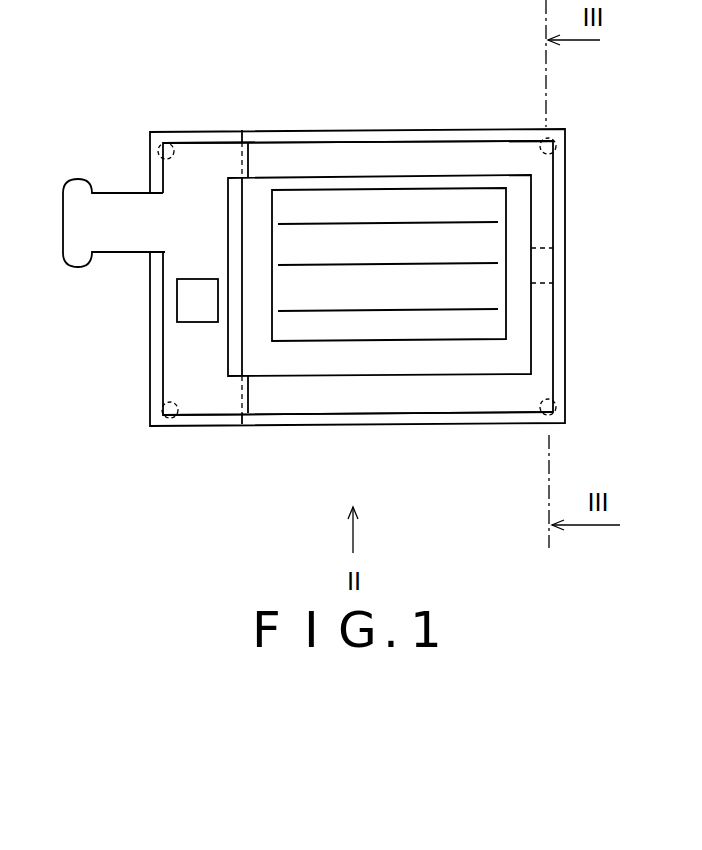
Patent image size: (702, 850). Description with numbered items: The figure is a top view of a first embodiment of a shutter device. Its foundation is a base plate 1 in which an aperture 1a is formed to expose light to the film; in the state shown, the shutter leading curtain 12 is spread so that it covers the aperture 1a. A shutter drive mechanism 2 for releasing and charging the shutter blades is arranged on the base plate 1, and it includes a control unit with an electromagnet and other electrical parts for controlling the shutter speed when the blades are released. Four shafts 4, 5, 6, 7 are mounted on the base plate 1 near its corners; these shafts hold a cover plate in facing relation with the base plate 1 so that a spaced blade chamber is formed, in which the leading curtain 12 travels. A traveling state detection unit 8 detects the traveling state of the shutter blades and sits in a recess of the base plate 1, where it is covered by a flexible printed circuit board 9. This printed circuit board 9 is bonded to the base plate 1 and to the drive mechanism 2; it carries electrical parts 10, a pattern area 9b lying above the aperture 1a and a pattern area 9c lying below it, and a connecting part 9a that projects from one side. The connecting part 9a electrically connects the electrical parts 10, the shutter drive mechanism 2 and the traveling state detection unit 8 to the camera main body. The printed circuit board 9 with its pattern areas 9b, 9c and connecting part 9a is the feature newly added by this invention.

The base plate 1 is at (363, 133).
The aperture 1a is at (404, 192).
The shutter drive mechanism 2 is at (218, 135).
The shaft 4 is at (556, 418).
The shaft 5 is at (175, 424).
The shaft 6 is at (548, 136).
The shaft 7 is at (163, 150).
The traveling state detection unit 8 is at (545, 290).
The flexible printed circuit board 9 is at (222, 398).
The connecting part 9a is at (74, 263).
The pattern area 9b is at (348, 163).
The pattern area 9c is at (390, 405).
The electrical parts 10 is at (185, 314).
The shutter leading curtain 12 is at (484, 246).